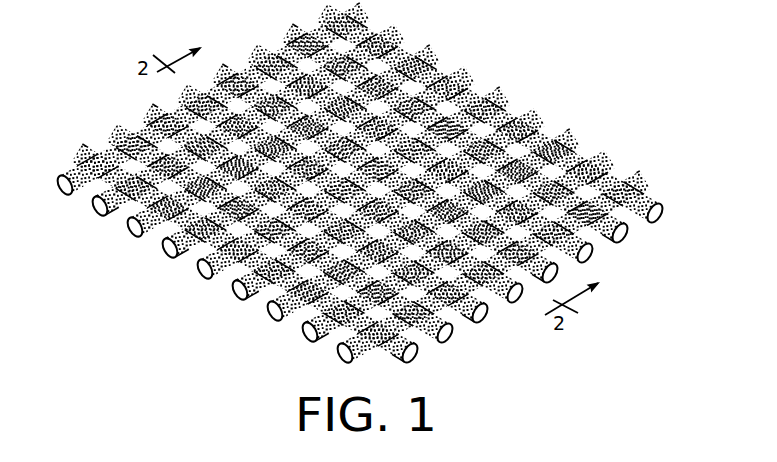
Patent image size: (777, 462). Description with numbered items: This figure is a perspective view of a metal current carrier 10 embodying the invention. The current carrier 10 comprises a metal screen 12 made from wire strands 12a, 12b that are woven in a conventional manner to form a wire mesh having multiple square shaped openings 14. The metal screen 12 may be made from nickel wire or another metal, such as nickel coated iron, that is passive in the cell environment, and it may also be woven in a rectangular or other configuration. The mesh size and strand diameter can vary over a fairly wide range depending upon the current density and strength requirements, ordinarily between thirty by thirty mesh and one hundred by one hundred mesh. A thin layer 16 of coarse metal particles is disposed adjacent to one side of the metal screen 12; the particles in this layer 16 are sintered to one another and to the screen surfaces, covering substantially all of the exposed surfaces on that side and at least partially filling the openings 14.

The metal current carrier 10 is at (348, 194).
The metal screen 12 is at (345, 194).
The wire strands 12a is at (307, 334).
The wire strands 12b is at (444, 336).
The openings 14 is at (520, 143).
The layer of coarse metal particles 16 is at (150, 224).